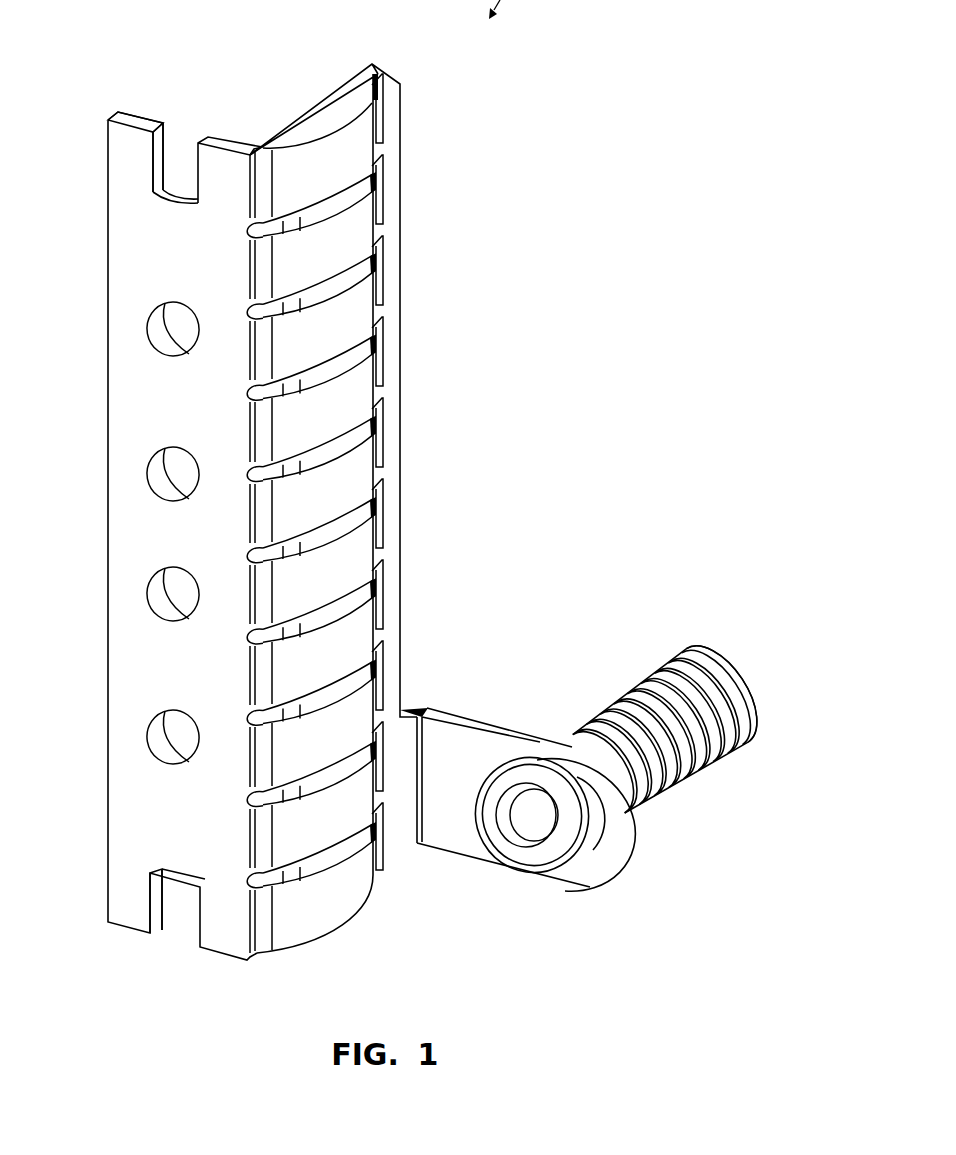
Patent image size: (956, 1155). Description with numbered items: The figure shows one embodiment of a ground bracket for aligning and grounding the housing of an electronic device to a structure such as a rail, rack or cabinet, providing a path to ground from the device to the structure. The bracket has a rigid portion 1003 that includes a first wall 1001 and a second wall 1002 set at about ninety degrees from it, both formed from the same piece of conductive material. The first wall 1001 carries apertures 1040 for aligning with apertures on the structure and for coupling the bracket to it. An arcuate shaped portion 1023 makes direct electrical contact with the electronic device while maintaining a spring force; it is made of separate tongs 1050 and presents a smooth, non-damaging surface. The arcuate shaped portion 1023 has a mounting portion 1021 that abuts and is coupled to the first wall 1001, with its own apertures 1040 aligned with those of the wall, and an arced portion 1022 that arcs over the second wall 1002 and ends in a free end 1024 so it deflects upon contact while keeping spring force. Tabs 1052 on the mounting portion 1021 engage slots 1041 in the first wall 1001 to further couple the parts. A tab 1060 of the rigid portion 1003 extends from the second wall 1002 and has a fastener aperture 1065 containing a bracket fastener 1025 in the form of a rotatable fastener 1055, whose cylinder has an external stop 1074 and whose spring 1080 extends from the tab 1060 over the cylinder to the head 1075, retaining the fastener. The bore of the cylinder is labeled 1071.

The first wall 1001 is at (136, 113).
The second wall 1002 is at (348, 80).
The rigid portion 1003 is at (150, 112).
The mounting portion 1021 is at (120, 176).
The arced portion 1022 is at (320, 200).
The arcuate shaped portion 1023 is at (328, 130).
The free end 1024 is at (383, 92).
The bracket fastener 1025 is at (758, 856).
The aperture 1040 is at (164, 330).
The slot 1041 is at (165, 197).
The tong 1050 is at (322, 167).
The tab 1052 is at (163, 147).
The rotatable fastener 1055 is at (713, 662).
The tab 1060 is at (596, 882).
The fastener aperture 1065 is at (628, 833).
The bore 1071 is at (526, 840).
The external stop 1074 is at (541, 762).
The head 1075 is at (748, 730).
The spring 1080 is at (695, 768).